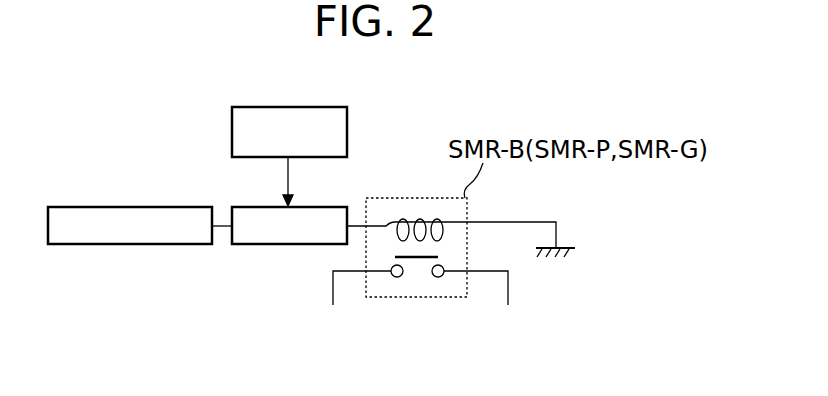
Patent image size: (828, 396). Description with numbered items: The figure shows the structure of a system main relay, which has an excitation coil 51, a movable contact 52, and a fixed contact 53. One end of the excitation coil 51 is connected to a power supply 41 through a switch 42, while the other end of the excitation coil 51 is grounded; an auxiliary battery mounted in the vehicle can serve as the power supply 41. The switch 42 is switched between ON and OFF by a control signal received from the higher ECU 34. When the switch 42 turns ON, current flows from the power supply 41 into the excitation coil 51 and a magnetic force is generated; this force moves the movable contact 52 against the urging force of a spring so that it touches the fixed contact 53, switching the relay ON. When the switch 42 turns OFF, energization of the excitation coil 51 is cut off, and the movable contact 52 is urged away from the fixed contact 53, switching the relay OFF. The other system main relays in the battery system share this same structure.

The higher ECU 34 is at (232, 128).
The power supply 41 is at (163, 245).
The switch 42 is at (288, 245).
The excitation coil 51 is at (415, 215).
The movable contact 52 is at (440, 257).
The fixed contact 53 is at (397, 278).